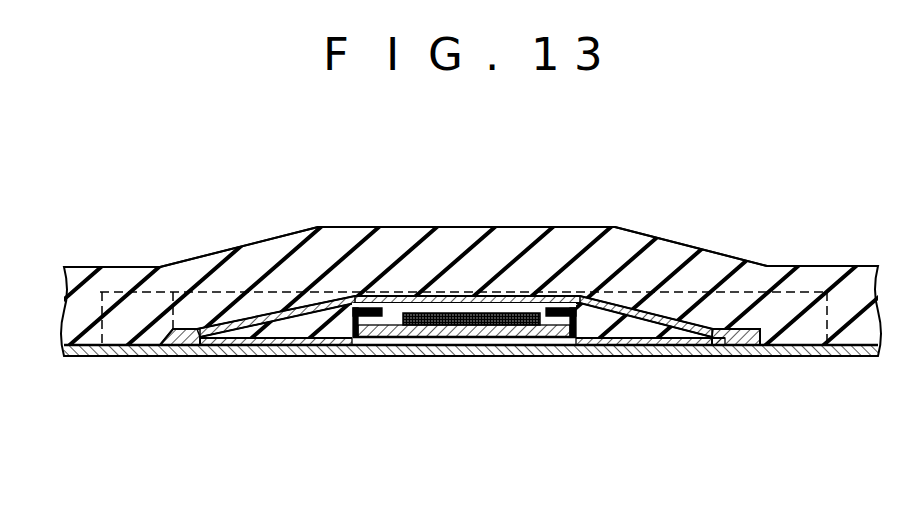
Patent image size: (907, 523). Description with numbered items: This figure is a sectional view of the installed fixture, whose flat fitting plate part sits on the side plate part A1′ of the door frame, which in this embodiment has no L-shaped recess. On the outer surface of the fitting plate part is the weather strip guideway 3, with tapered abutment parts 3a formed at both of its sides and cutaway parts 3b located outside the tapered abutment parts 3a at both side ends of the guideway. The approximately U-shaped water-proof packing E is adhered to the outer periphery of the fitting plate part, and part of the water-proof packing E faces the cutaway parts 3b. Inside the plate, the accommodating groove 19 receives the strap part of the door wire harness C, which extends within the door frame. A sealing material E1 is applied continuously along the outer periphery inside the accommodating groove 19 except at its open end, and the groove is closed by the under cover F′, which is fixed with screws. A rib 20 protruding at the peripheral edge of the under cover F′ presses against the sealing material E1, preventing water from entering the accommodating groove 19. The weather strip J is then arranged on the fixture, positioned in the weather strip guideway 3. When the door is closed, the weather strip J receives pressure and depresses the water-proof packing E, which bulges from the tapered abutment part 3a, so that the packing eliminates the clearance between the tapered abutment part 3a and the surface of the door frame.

The weather strip J is at (327, 225).
The weather strip guideway 3 is at (479, 296).
The tapered abutment part 3a is at (265, 315).
The cutaway part 3b is at (175, 329).
The door wire harness C is at (508, 300).
The accommodating groove 19 is at (548, 302).
The rib 20 is at (371, 336).
The sealing material E1 is at (374, 304).
The under cover F′ is at (428, 340).
The water-proof packing E is at (193, 342).
The side plate part A1′ is at (805, 350).